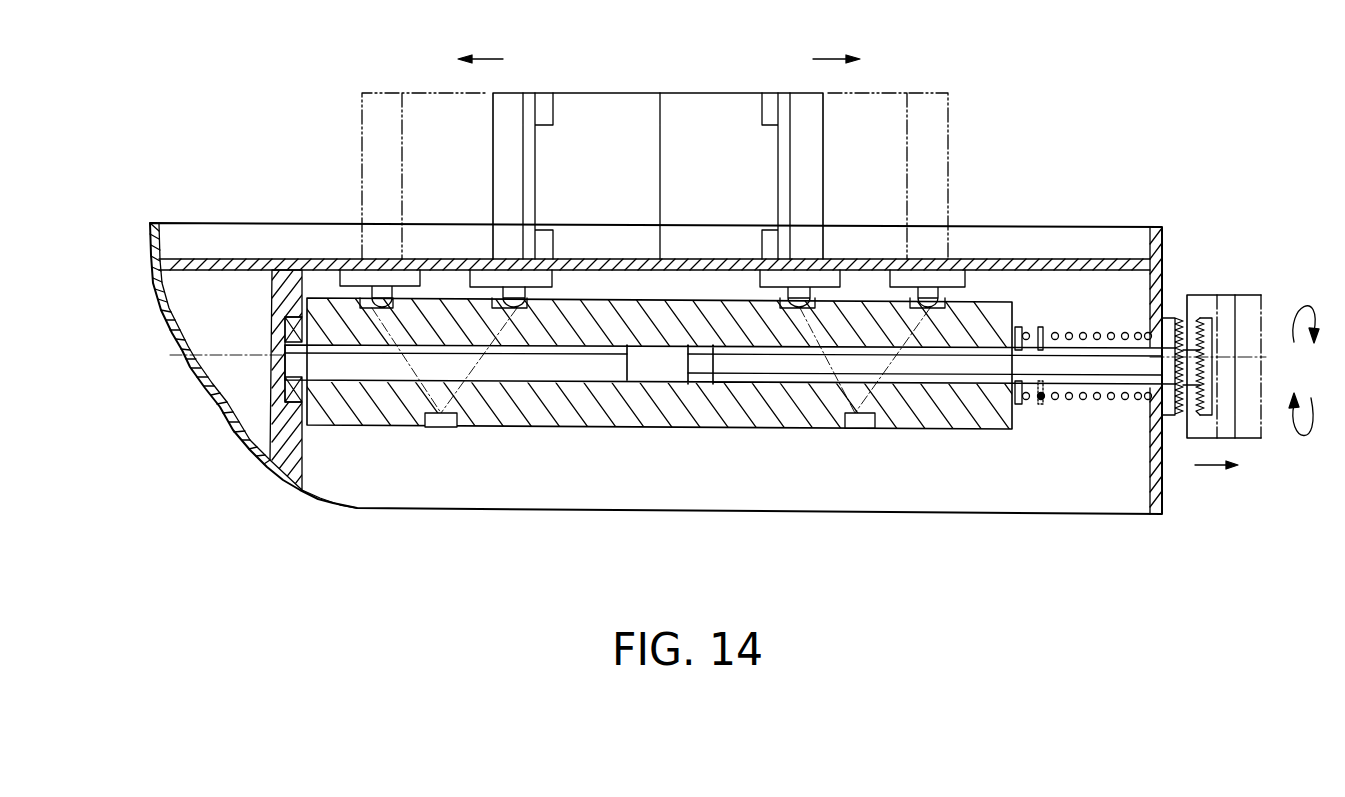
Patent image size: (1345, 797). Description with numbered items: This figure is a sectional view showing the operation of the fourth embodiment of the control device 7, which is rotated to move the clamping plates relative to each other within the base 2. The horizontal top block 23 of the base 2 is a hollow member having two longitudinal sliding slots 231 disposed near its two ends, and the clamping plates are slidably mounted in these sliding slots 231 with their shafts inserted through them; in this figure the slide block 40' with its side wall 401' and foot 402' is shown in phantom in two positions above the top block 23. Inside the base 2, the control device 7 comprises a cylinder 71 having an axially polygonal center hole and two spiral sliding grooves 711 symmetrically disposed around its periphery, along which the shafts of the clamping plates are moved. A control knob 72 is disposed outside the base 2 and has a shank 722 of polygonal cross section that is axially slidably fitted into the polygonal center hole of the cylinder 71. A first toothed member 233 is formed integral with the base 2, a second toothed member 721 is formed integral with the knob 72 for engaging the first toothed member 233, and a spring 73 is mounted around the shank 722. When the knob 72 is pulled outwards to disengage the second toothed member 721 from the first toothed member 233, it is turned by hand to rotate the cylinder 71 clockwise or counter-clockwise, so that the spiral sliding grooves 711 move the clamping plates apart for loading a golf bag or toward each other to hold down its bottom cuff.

The base 2 is at (1080, 227).
The horizontal top block 23 is at (1015, 268).
The slide block 40' is at (655, 132).
The slide block side wall 401' is at (840, 176).
The slide block foot 402' is at (551, 249).
The longitudinal sliding slots 231 is at (440, 268).
The control device 7 is at (735, 428).
The cylinder 71 is at (626, 413).
The spiral sliding grooves 711 is at (440, 418).
The shank 722 is at (984, 374).
The spring 73 is at (1078, 400).
The first toothed member 233 is at (1170, 328).
The second toothed member 721 is at (1181, 417).
The control knob 72 is at (1225, 305).